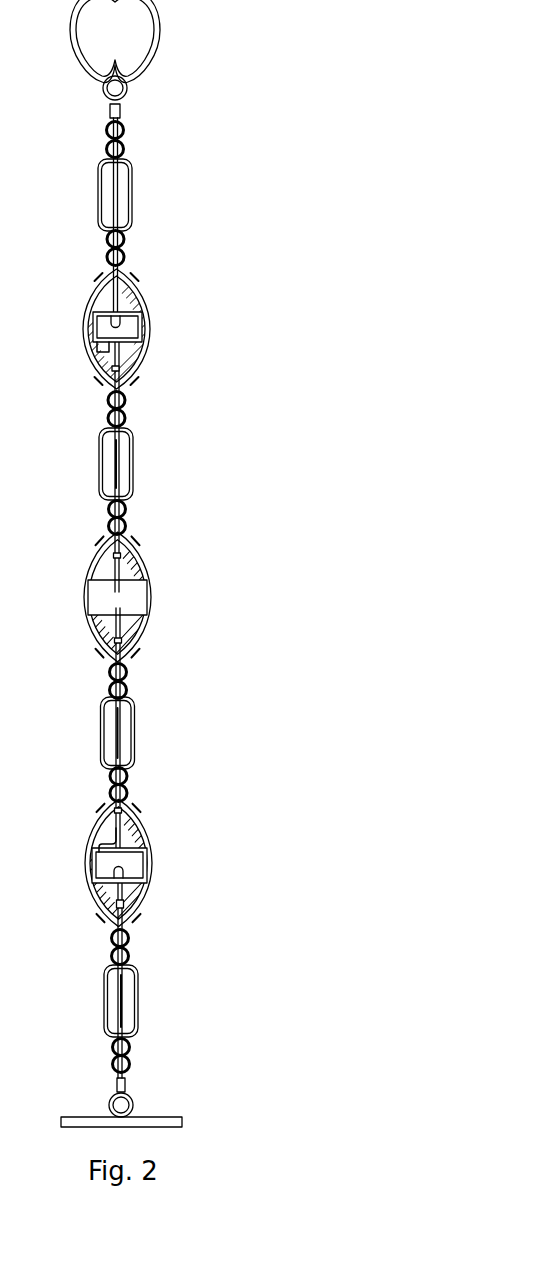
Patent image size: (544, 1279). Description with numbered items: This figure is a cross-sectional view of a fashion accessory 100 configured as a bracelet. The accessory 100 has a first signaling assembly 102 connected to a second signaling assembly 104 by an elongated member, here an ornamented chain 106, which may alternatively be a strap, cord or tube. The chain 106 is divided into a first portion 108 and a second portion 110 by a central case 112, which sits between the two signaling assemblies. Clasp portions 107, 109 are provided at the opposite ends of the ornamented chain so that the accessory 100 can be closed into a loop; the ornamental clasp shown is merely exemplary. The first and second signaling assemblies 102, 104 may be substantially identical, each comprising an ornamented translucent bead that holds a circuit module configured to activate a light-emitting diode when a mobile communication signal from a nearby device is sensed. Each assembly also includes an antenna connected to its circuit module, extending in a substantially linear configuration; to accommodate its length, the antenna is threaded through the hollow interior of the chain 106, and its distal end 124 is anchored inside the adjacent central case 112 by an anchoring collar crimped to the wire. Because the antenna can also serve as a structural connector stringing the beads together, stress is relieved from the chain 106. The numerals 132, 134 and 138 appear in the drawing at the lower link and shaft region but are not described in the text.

The fashion accessory 100 is at (160, 192).
The first signaling assembly 102 is at (146, 305).
The second signaling assembly 104 is at (145, 848).
The ornamented chain 106 is at (127, 452).
The clasp portion 107 is at (150, 25).
The first portion of chain 108 is at (133, 447).
The clasp portion 109 is at (150, 1117).
The second portion of chain 110 is at (155, 733).
The central case 112 is at (151, 592).
The distal end of antenna 124 is at (88, 590).
The link 132 is at (0, 970).
The shaft 134 is at (0, 1031).
The coupling 138 is at (0, 903).